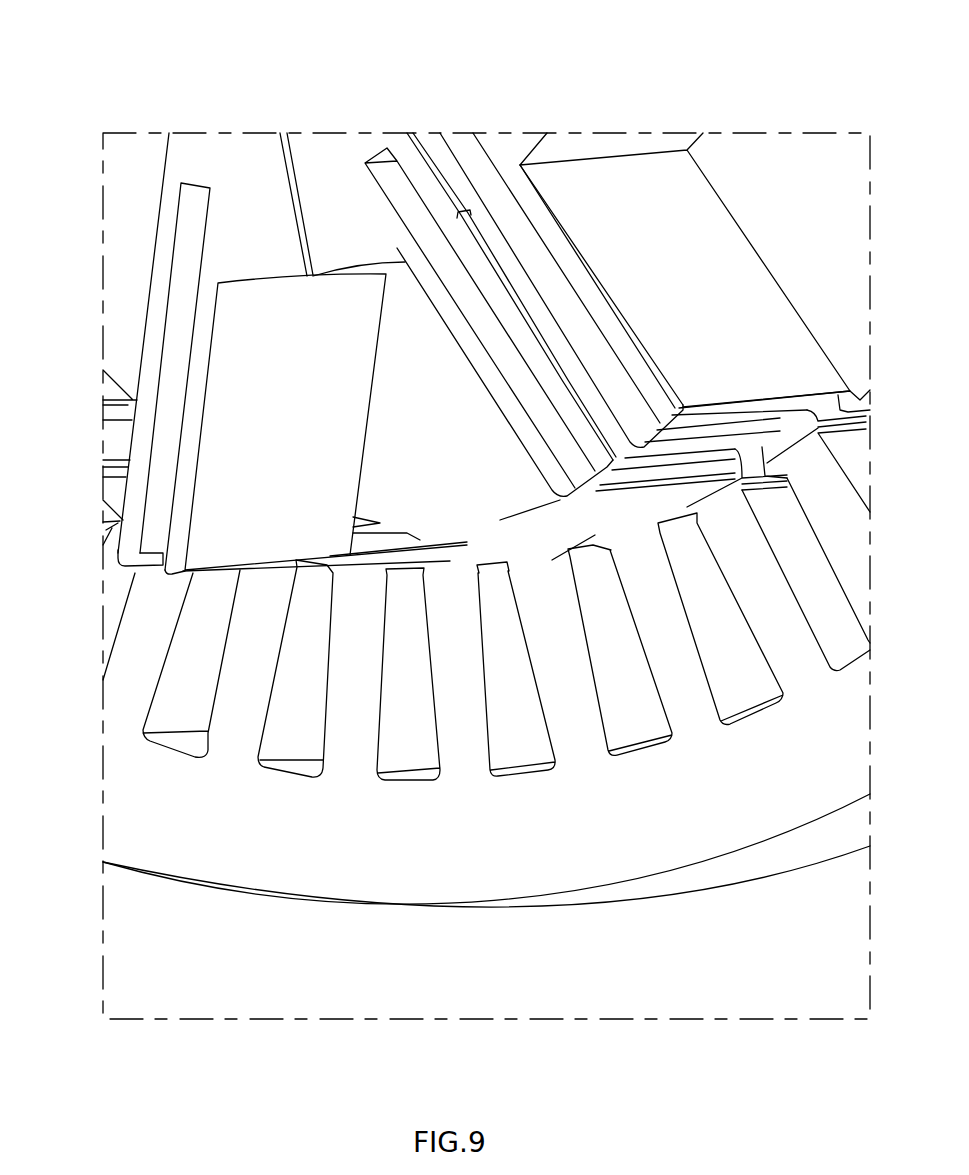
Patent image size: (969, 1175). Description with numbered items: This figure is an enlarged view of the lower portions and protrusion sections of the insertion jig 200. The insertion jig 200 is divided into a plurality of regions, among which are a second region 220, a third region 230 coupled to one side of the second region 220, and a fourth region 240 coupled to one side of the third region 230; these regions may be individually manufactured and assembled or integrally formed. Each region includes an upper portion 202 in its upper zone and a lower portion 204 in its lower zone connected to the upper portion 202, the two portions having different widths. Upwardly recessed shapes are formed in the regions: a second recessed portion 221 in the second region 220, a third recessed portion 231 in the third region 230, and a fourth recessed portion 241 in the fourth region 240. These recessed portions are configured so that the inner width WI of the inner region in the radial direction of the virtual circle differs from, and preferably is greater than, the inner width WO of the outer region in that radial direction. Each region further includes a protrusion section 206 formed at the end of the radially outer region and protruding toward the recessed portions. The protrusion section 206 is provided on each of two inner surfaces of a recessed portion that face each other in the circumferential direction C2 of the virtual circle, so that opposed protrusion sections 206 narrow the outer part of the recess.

The insertion jig 200 is at (403, 76).
The upper portion 202 is at (341, 150).
The lower portion 204 is at (473, 348).
The protrusion section 206 is at (121, 546).
The second region 220 is at (494, 129).
The second recessed portion 221 is at (600, 312).
The third region 230 is at (308, 129).
The third recessed portion 231 is at (524, 428).
The fourth region 240 is at (236, 129).
The fourth recessed portion 241 is at (190, 408).
The inner width of the inner region WI is at (549, 287).
The inner width of the outer region WO is at (636, 438).
The circumferential direction C2 is at (133, 918).